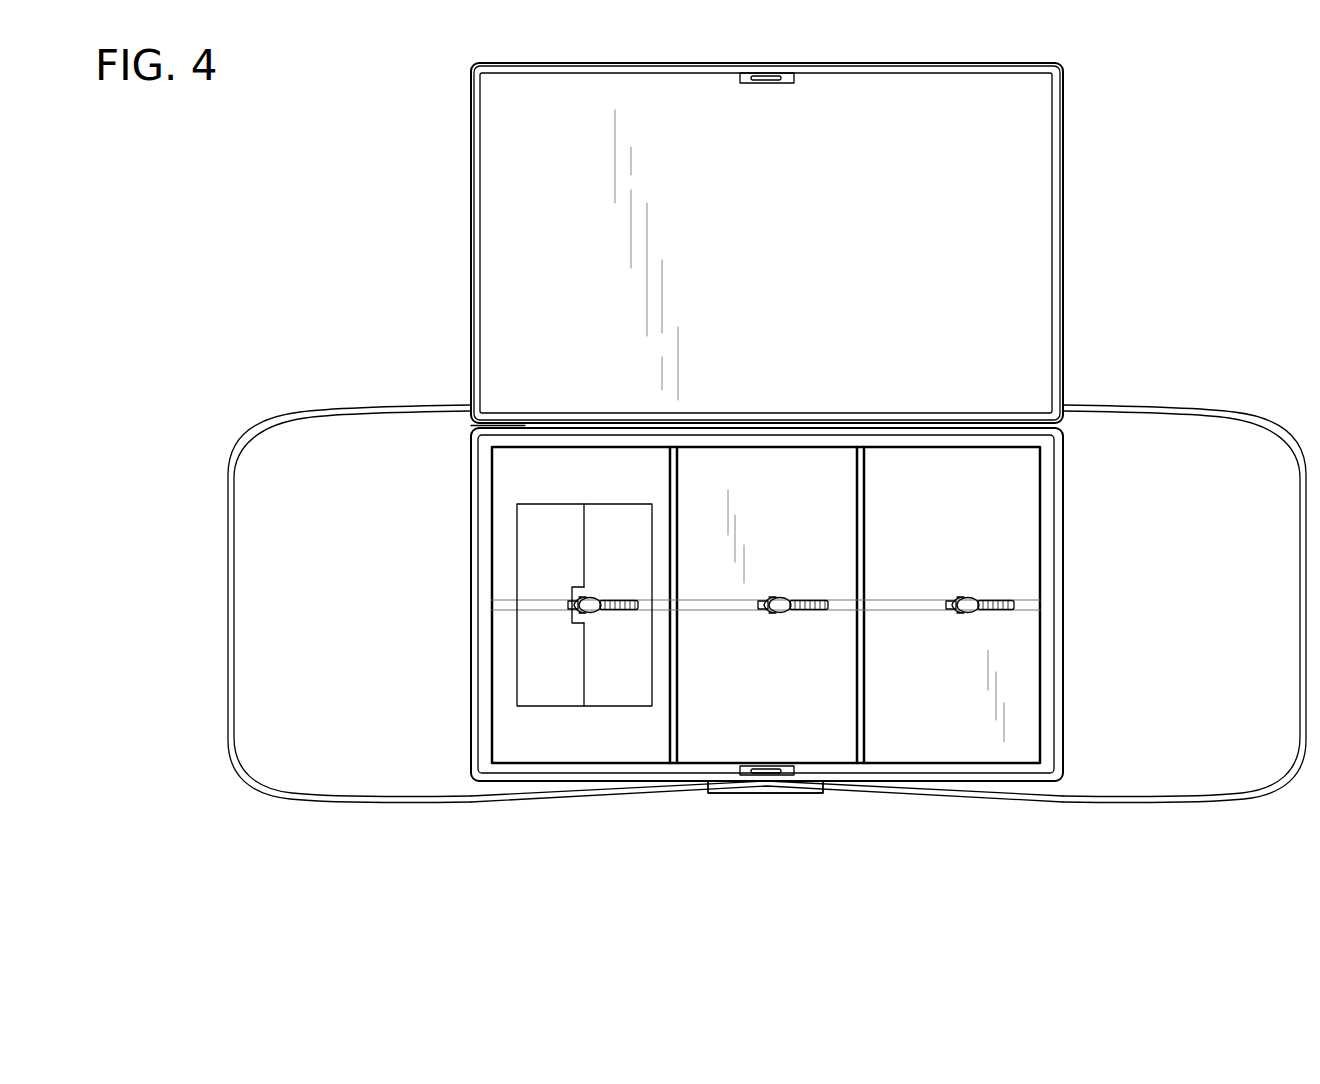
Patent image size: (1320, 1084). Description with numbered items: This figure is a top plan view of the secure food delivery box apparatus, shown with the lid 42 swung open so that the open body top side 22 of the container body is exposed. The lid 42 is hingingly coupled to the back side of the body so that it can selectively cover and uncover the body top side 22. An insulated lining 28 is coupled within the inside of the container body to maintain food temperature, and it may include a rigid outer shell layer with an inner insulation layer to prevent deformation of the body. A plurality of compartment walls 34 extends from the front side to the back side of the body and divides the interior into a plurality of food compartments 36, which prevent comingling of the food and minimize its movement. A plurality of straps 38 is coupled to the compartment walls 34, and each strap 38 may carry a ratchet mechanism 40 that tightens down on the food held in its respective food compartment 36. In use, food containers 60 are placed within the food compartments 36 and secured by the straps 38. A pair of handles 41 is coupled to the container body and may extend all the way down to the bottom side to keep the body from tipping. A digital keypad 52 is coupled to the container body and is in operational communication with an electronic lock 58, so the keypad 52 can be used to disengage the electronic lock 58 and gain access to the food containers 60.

The open body top side 22 is at (878, 780).
The insulated lining 28 is at (1043, 535).
The compartment walls 34 is at (857, 467).
The food compartments 36 is at (893, 720).
The straps 38 is at (515, 606).
The ratchet mechanism 40 is at (590, 600).
The pair of handles 41 is at (1134, 801).
The lid 42 is at (535, 176).
The digital keypad 52 is at (735, 793).
The electronic lock 58 is at (768, 772).
The food containers 60 is at (524, 667).